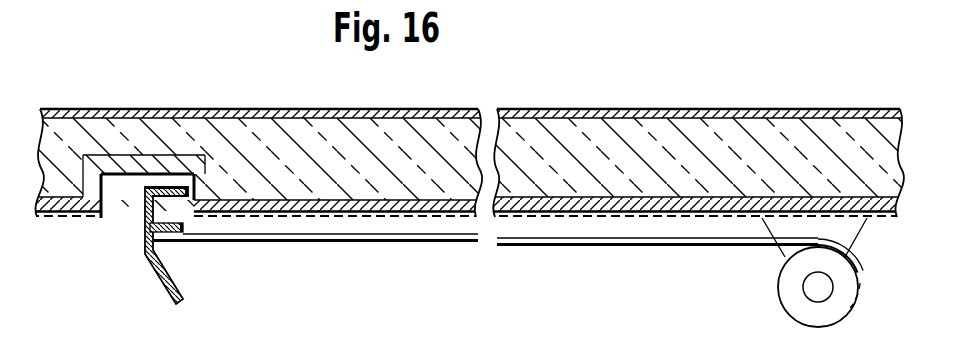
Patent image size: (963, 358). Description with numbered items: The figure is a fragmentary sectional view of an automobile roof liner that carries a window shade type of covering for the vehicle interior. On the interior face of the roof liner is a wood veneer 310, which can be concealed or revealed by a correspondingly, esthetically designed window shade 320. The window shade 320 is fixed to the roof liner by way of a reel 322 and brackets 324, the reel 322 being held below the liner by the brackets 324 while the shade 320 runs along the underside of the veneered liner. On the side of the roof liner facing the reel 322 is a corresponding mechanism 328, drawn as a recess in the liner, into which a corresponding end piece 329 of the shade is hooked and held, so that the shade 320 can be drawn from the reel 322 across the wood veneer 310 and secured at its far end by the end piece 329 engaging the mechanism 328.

The wood veneer 310 is at (260, 202).
The window shade 320 is at (668, 241).
The reel 322 is at (790, 298).
The brackets 324 is at (847, 234).
The mechanism 328 is at (128, 211).
The end piece 329 is at (145, 222).